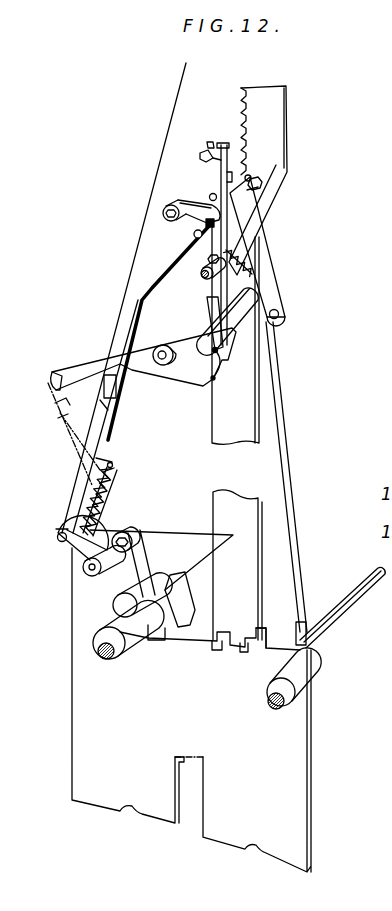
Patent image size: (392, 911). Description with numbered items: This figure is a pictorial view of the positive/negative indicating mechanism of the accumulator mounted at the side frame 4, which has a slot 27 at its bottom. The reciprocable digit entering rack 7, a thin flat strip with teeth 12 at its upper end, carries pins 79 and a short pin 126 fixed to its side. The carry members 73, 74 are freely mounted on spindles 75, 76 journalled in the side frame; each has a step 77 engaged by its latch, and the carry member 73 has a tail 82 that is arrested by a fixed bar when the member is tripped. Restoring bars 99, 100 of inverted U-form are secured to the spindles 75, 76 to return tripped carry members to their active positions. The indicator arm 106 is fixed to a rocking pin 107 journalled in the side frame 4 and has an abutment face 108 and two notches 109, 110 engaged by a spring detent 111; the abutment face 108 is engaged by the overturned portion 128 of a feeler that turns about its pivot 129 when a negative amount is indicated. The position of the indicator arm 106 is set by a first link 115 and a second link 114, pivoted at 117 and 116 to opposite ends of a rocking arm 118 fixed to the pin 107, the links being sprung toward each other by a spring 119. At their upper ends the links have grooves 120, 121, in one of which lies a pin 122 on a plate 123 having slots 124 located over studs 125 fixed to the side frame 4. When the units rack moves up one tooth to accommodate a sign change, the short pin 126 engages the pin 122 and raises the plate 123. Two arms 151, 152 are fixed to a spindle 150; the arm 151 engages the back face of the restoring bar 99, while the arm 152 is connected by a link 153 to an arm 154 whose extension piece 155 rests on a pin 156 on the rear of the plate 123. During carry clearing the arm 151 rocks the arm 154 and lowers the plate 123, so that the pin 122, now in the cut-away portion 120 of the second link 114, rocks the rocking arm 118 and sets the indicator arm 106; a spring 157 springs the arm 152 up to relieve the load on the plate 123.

The side frame 4 is at (95, 698).
The slot 27 is at (197, 807).
The digit entering rack 7 is at (67, 527).
The spring 157 is at (78, 492).
The pivot 129 is at (112, 492).
The arm 152 is at (80, 547).
The spindle 150 is at (87, 570).
The arm 151 is at (147, 553).
The restoring bar 99 is at (123, 602).
The spindle 75 is at (97, 657).
The tail 82 is at (150, 640).
The carry member 73 is at (192, 633).
The pins 79 is at (243, 643).
The step 77 is at (195, 615).
The carry member 74 is at (262, 628).
The spindle 76 is at (267, 702).
The restoring bar 100 is at (347, 590).
The rocking arm 118 is at (257, 310).
The pivot 117 is at (280, 318).
The teeth 12 is at (275, 105).
The groove 121 is at (250, 176).
The short pin 126 is at (262, 182).
The first link 115 is at (248, 200).
The pin 122 is at (213, 197).
The second link 114 is at (230, 178).
The studs 125 is at (208, 145).
The slots 124 is at (204, 155).
The groove 120 is at (213, 160).
The extension piece 155 is at (165, 214).
The arm 154 is at (195, 225).
The pin 156 is at (208, 222).
The plate 123 is at (218, 242).
The spring 119 is at (212, 258).
The pivot 116 is at (203, 282).
The indicator arm 106 is at (87, 367).
The abutment face 108 is at (68, 370).
The notch 109 is at (181, 363).
The rocking pin 107 is at (233, 302).
The spring detent 111 is at (222, 330).
The notch 110 is at (214, 380).
The link 153 is at (113, 383).
The overturned portion 128 is at (57, 413).